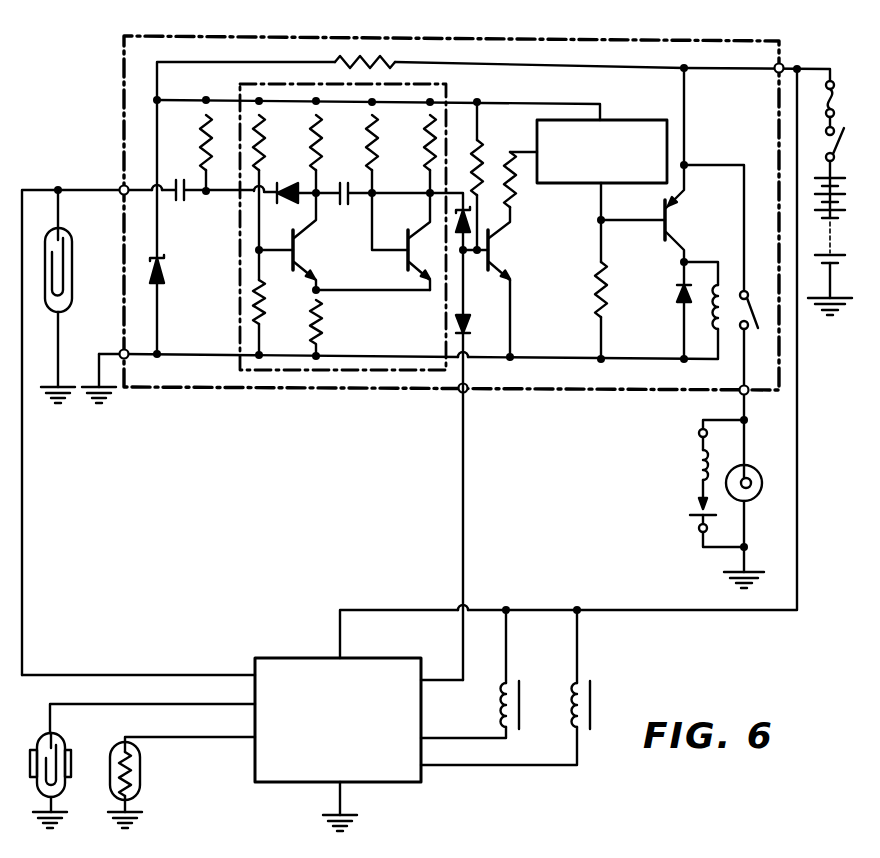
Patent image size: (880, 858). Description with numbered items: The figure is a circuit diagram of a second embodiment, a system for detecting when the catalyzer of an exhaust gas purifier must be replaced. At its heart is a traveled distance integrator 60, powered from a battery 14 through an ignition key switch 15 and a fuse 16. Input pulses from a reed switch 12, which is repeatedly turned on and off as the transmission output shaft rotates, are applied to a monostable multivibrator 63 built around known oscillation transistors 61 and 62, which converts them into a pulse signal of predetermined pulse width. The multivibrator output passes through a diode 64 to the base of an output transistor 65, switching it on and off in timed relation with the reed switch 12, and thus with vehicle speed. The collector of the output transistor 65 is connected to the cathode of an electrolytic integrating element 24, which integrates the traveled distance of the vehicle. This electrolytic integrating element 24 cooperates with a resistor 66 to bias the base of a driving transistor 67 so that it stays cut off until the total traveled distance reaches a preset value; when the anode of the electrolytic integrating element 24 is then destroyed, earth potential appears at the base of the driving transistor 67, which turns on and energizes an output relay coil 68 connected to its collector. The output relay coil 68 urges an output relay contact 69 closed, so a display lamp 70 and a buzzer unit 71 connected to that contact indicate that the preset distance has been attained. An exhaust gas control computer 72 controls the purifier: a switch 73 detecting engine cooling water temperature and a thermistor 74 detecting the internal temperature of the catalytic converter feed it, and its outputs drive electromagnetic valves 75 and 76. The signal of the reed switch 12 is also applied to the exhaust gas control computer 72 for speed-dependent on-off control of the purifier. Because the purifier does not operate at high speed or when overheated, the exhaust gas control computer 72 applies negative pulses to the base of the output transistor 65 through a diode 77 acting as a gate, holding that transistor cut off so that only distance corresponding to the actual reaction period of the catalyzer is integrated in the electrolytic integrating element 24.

The reed switch 12 is at (72, 258).
The battery 14 is at (833, 226).
The ignition key switch 15 is at (838, 147).
The fuse 16 is at (836, 91).
The electrolytic integrating element 24 is at (623, 118).
The traveled distance integrator 60 is at (452, 34).
The oscillation transistor 61 is at (299, 254).
The oscillation transistor 62 is at (404, 258).
The monostable multivibrator 63 is at (240, 236).
The diode 64 is at (453, 203).
The output transistor 65 is at (498, 253).
The resistor 66 is at (608, 283).
The driving transistor 67 is at (675, 231).
The output relay coil 68 is at (713, 309).
The output relay contact 69 is at (761, 286).
The display lamp 70 is at (762, 491).
The buzzer unit 71 is at (697, 462).
The exhaust gas control computer 72 is at (293, 658).
The switch 73 is at (70, 760).
The thermistor 74 is at (139, 762).
The electromagnetic valve 75 is at (527, 697).
The electromagnetic valve 76 is at (598, 698).
The diode 77 is at (472, 323).